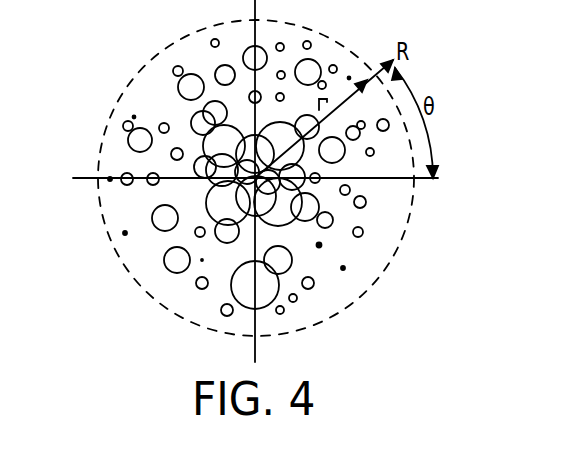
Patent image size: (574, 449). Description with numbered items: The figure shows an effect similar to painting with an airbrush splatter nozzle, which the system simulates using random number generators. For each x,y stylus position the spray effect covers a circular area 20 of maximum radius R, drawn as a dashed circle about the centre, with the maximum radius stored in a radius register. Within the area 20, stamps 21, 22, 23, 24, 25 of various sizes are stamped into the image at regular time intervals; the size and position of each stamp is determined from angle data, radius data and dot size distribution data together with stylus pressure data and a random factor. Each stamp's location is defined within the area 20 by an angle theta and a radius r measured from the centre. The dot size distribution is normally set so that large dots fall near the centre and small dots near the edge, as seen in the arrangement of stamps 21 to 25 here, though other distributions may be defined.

The area 20 is at (127, 78).
The stamp 21 is at (207, 215).
The stamp 22 is at (152, 218).
The stamp 23 is at (196, 285).
The stamp 24 is at (319, 245).
The stamp 25 is at (235, 293).